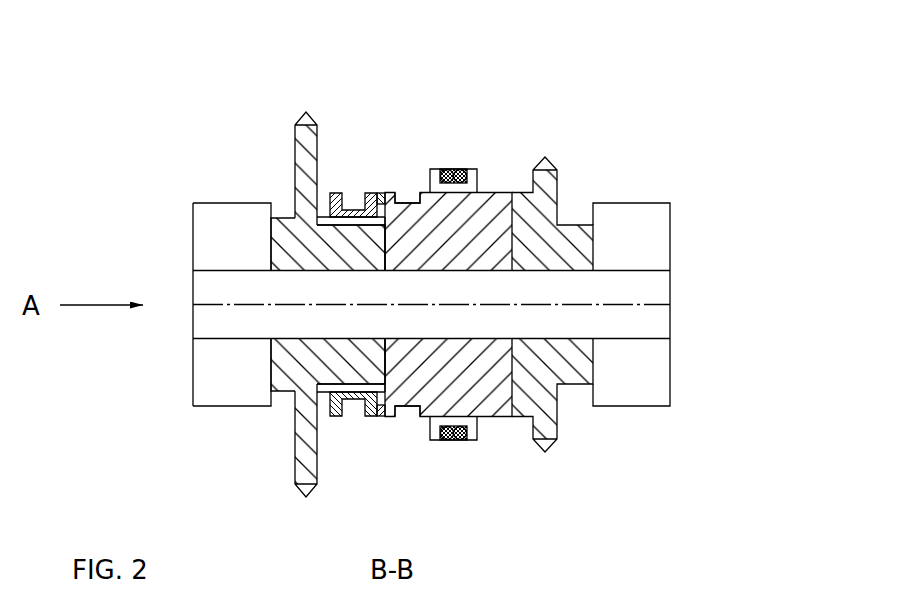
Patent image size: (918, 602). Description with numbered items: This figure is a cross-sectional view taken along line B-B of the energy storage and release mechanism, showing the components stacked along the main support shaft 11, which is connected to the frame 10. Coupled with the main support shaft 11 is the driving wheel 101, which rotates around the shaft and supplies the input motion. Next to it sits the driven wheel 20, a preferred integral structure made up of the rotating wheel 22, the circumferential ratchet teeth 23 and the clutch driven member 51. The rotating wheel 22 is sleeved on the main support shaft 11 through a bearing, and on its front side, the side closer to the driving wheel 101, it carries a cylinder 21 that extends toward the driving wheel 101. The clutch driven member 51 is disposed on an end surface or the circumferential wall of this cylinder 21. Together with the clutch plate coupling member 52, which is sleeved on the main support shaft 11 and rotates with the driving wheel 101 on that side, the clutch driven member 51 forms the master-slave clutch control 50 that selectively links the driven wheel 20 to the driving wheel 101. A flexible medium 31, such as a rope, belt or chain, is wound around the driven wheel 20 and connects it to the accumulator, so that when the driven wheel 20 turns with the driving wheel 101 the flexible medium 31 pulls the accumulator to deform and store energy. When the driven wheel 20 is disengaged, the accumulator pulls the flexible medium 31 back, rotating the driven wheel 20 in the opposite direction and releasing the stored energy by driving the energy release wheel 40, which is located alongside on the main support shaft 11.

The frame 10 is at (222, 240).
The driving wheel 101 is at (296, 163).
The main support shaft 11 is at (205, 295).
The driven wheel 20 is at (451, 371).
The cylinder 21 is at (397, 376).
The rotating wheel 22 is at (486, 193).
The circumferential ratchet teeth 23 is at (408, 190).
The flexible medium 31 is at (451, 441).
The energy release wheel 40 is at (542, 200).
The master-slave clutch control 50 is at (354, 213).
The clutch driven member 51 is at (380, 190).
The clutch plate coupling member 52 is at (362, 190).